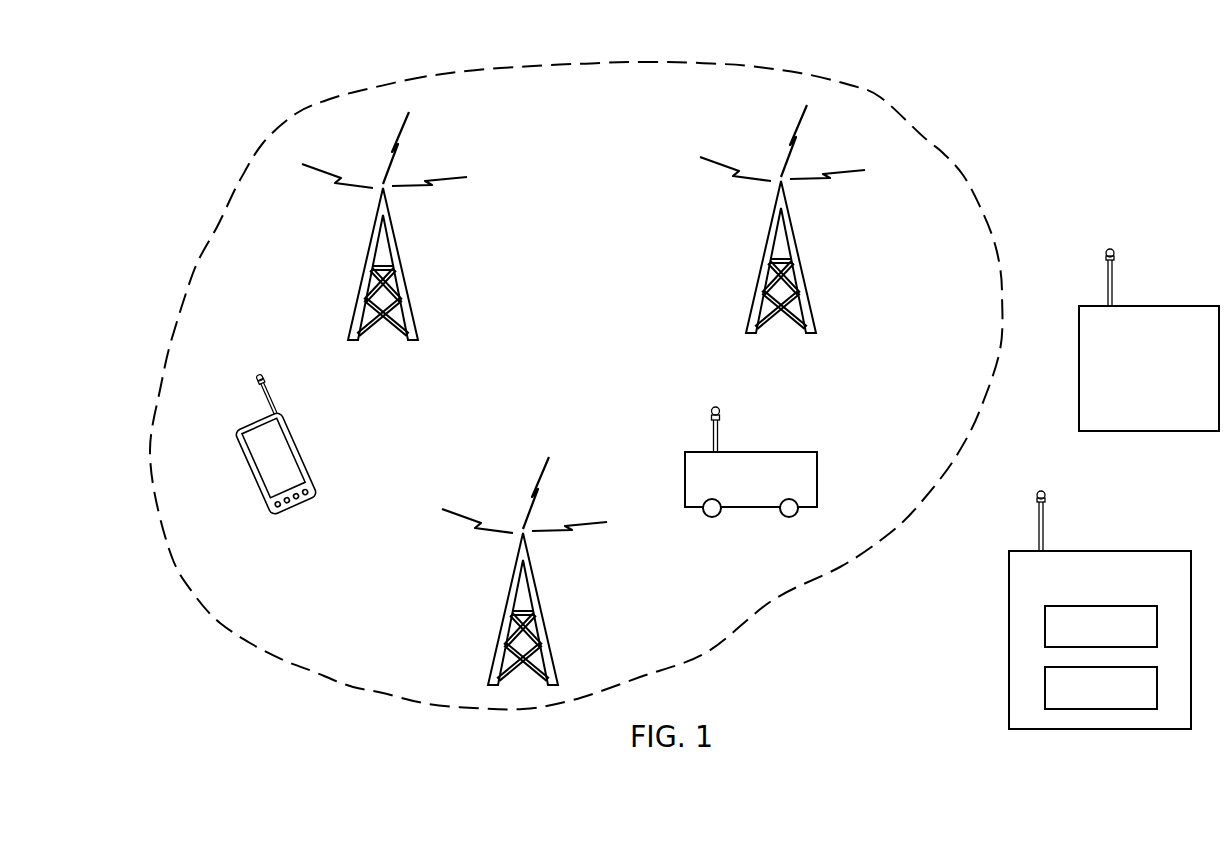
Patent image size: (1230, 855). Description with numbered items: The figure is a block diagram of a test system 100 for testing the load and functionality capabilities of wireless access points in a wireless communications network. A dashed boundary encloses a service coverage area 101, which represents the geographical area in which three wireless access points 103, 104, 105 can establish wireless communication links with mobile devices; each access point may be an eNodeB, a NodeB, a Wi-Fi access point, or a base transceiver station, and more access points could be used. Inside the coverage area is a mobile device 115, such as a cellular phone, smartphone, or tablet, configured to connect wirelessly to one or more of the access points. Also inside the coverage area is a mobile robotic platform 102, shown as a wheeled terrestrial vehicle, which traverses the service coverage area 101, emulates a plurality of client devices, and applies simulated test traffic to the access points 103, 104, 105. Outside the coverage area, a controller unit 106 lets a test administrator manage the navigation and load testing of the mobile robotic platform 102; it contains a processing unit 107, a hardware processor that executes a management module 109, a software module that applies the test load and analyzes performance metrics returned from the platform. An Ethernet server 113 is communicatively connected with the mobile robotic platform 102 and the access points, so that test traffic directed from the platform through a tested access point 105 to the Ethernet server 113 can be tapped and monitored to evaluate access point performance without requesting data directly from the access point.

The test system 100 is at (1134, 136).
The service coverage area 101 is at (940, 148).
The mobile robotic platform 102 is at (788, 452).
The wireless access point 103 is at (367, 269).
The wireless access point 104 is at (507, 613).
The wireless access point 105 is at (763, 262).
The controller unit 106 is at (1132, 550).
The processing unit 107 is at (1045, 627).
The management module 109 is at (1045, 688).
The Ethernet server 113 is at (1180, 305).
The mobile device 115 is at (252, 478).